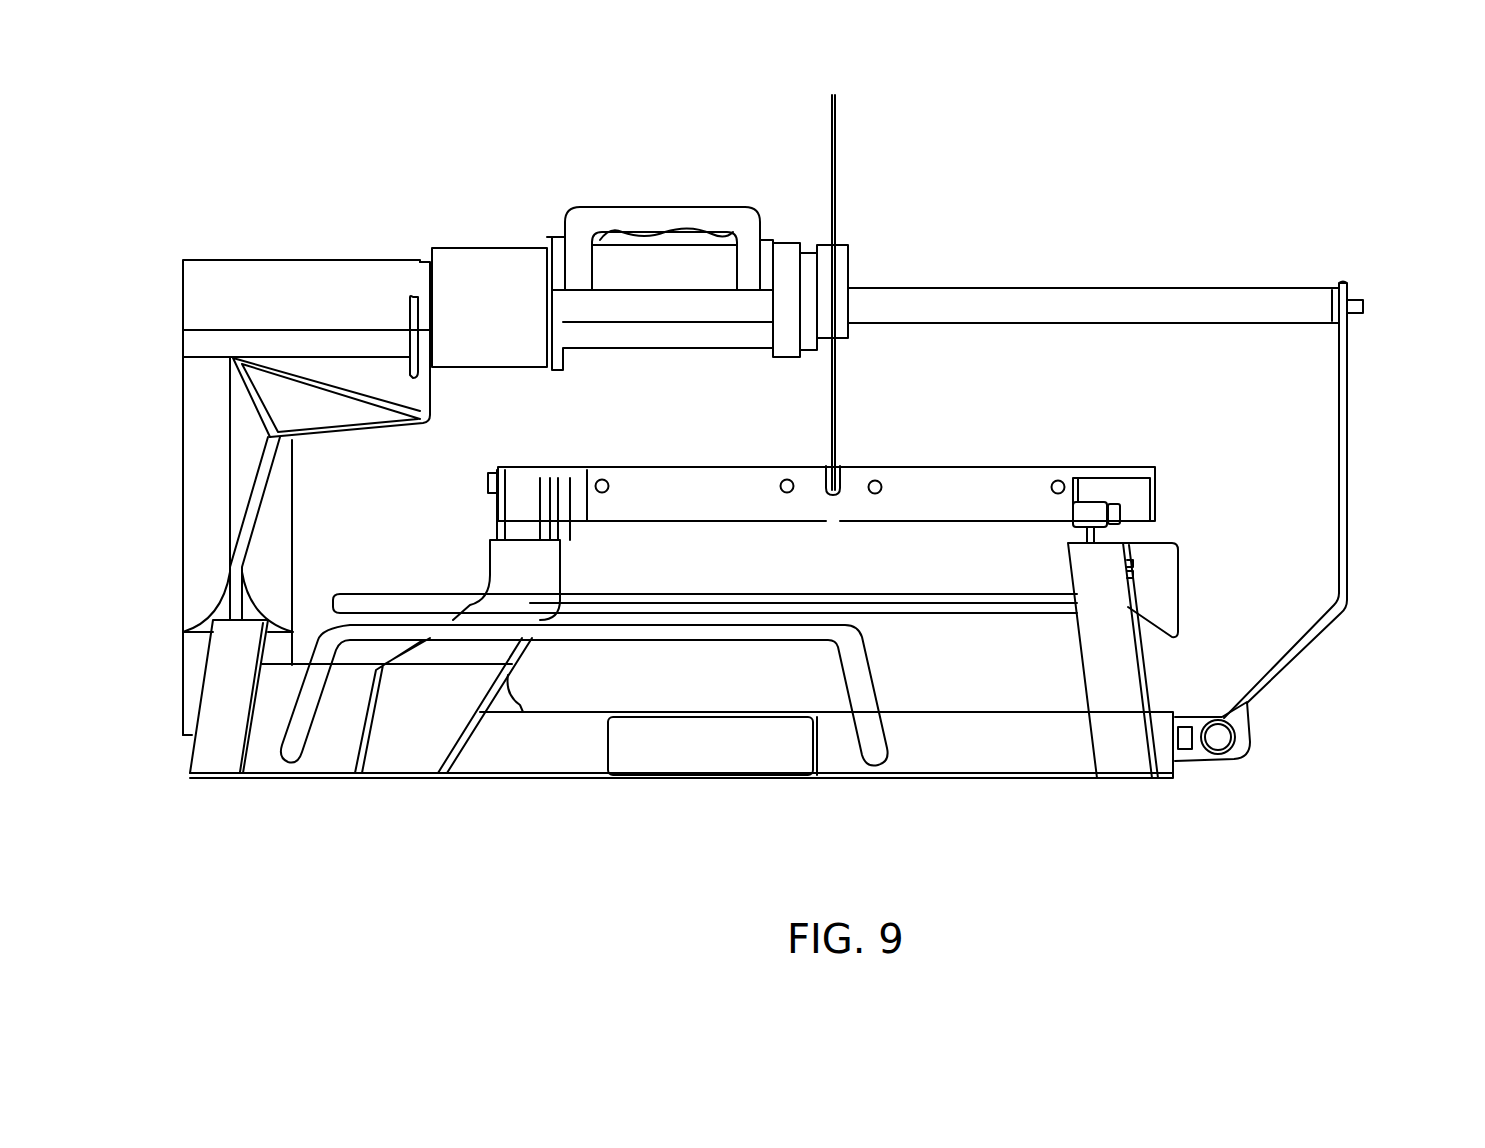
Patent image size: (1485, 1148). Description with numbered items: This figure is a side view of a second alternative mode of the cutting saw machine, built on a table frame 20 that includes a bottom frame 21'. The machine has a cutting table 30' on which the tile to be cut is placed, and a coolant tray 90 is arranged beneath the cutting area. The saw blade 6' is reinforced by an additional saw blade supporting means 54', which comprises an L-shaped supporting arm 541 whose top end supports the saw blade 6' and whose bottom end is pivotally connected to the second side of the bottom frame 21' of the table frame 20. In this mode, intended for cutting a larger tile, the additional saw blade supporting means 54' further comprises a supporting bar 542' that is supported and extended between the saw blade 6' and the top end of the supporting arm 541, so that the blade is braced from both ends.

The table frame 20 is at (678, 492).
The bottom frame 21' is at (828, 703).
The saw blade 6' is at (928, 295).
The cutting table 30' is at (954, 500).
The coolant tray 90 is at (962, 672).
The additional saw blade supporting means 54' is at (1330, 584).
The supporting arm 541 is at (1343, 577).
The supporting bar 542' is at (1105, 220).